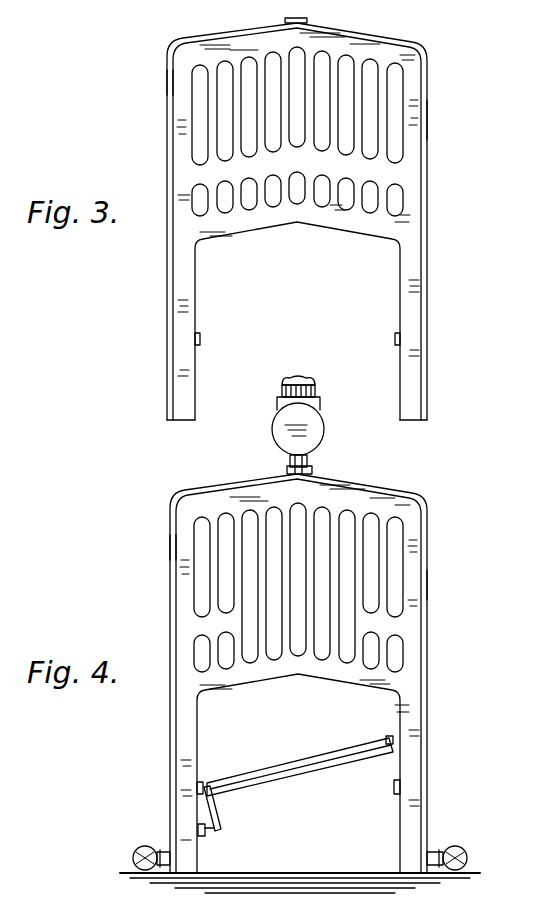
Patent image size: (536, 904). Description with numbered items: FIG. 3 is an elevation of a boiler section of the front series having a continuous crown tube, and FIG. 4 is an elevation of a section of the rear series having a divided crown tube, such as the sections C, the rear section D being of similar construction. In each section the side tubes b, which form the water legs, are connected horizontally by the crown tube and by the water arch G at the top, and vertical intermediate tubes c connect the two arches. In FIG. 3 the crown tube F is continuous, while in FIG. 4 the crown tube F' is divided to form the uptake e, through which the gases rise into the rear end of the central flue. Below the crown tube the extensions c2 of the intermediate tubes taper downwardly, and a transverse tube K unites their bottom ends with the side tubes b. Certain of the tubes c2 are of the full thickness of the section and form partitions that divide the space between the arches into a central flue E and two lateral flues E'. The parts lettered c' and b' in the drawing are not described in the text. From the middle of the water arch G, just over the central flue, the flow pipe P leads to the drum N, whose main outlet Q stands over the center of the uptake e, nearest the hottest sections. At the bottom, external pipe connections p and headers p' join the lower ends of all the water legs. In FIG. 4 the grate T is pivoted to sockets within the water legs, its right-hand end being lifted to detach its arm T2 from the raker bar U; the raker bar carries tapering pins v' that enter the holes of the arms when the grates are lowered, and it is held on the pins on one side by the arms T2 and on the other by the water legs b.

In FIG. 3, the water arch G is at (242, 43).
In FIG. 4, the water arch G is at (216, 496).
In FIG. 3, the central flue E is at (324, 79).
In FIG. 4, the central flue E is at (407, 565).
In FIG. 3, the lateral flues E' is at (412, 111).
In FIG. 4, the lateral flues E' is at (340, 488).
In FIG. 3, the sections of the rear series C is at (428, 118).
In FIG. 4, the rear section D is at (428, 585).
In FIG. 3, the side tubes b is at (159, 82).
In FIG. 4, the side tubes b is at (160, 547).
In FIG. 3, the intermediate tubes c is at (175, 115).
In FIG. 4, the intermediate tubes c is at (175, 567).
In FIG. 3, the extensions of the intermediate tubes c2 is at (238, 117).
In FIG. 4, the extensions of the intermediate tubes c2 is at (238, 568).
In FIG. 3, the lower short slots c' is at (297, 214).
In FIG. 3, the continuous crown tube F is at (306, 161).
In FIG. 4, the divided crown tube F' is at (298, 644).
In FIG. 3, the transverse tube K is at (286, 212).
In FIG. 4, the transverse tube K is at (295, 667).
In FIG. 3, the lugs on legs b' is at (299, 336).
In FIG. 4, the lugs on legs b' is at (302, 772).
In FIG. 4, the main outlet Q is at (318, 388).
In FIG. 4, the drum N is at (325, 427).
In FIG. 4, the flow pipe P is at (307, 462).
In FIG. 4, the uptake e is at (298, 583).
In FIG. 4, the grate T is at (287, 767).
In FIG. 4, the arm T2 is at (217, 810).
In FIG. 4, the raker bar U is at (211, 845).
In FIG. 4, the pins v' is at (229, 839).
In FIG. 4, the external pipe connections p is at (460, 844).
In FIG. 4, the headers p' is at (140, 855).